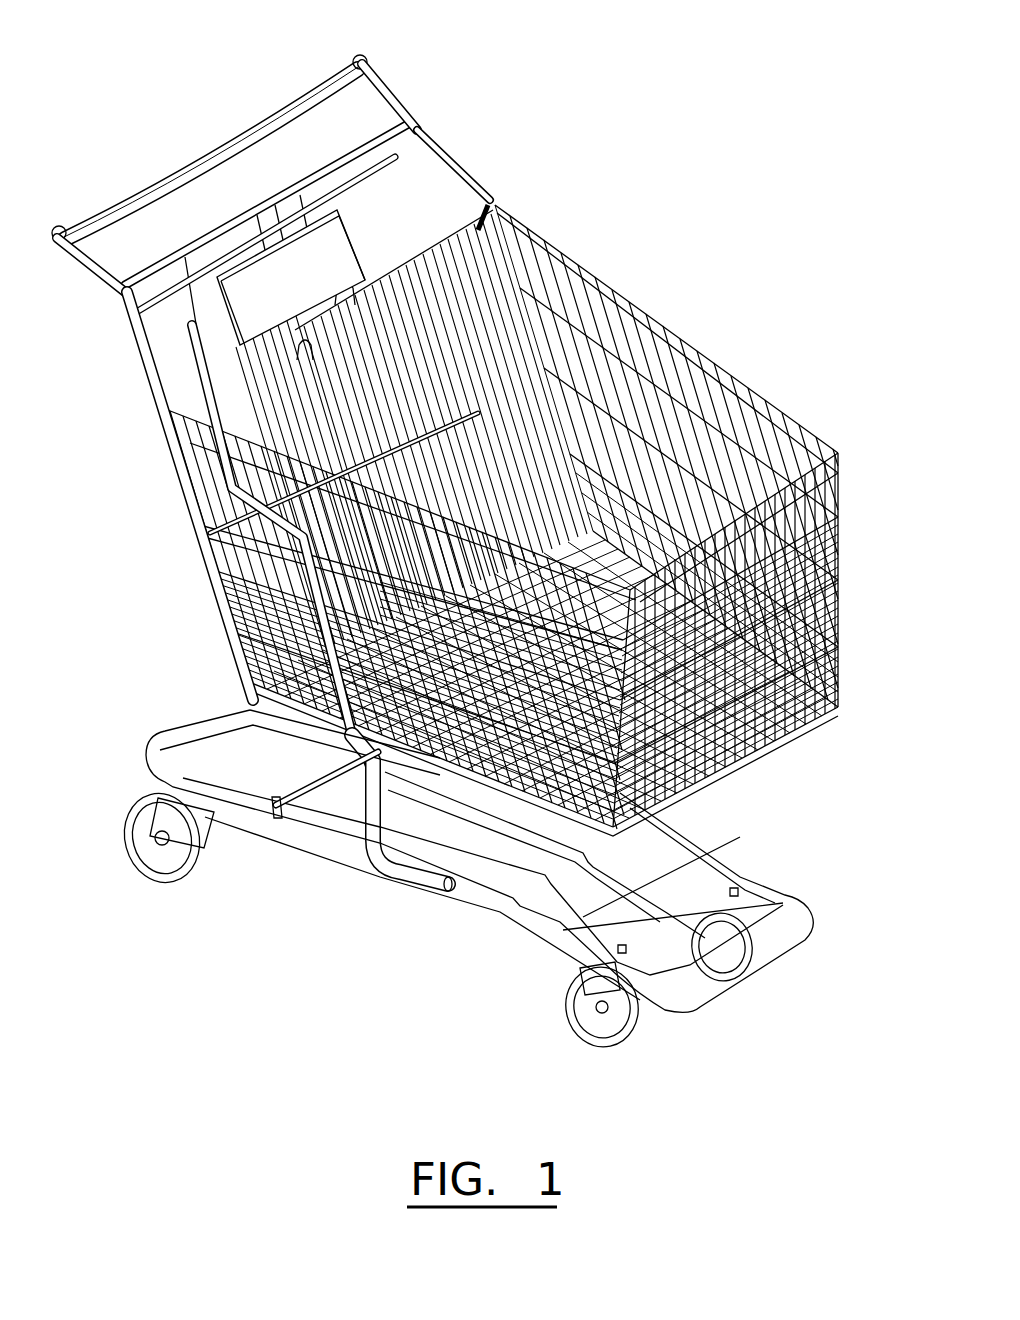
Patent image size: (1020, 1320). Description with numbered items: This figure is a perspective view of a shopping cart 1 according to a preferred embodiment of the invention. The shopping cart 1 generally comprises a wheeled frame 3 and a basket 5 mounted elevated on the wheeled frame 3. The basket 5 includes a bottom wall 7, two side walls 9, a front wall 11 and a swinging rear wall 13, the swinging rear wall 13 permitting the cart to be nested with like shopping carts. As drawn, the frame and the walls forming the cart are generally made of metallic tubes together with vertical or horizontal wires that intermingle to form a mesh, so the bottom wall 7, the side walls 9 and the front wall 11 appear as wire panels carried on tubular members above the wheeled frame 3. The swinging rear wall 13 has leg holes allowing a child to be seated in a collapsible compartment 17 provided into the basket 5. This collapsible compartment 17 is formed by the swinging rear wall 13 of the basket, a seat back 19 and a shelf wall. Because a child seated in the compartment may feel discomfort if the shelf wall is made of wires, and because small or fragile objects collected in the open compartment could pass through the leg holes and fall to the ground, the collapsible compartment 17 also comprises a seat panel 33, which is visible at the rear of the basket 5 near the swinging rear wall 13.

The shopping cart 1 is at (480, 548).
The wheeled frame 3 is at (810, 940).
The basket 5 is at (517, 520).
The bottom wall 7 is at (742, 776).
The side walls 9 is at (763, 437).
The front wall 11 is at (811, 652).
The swinging rear wall 13 is at (220, 244).
The collapsible compartment 17 is at (339, 289).
The seat back 19 is at (500, 199).
The seat panel 33 is at (291, 277).